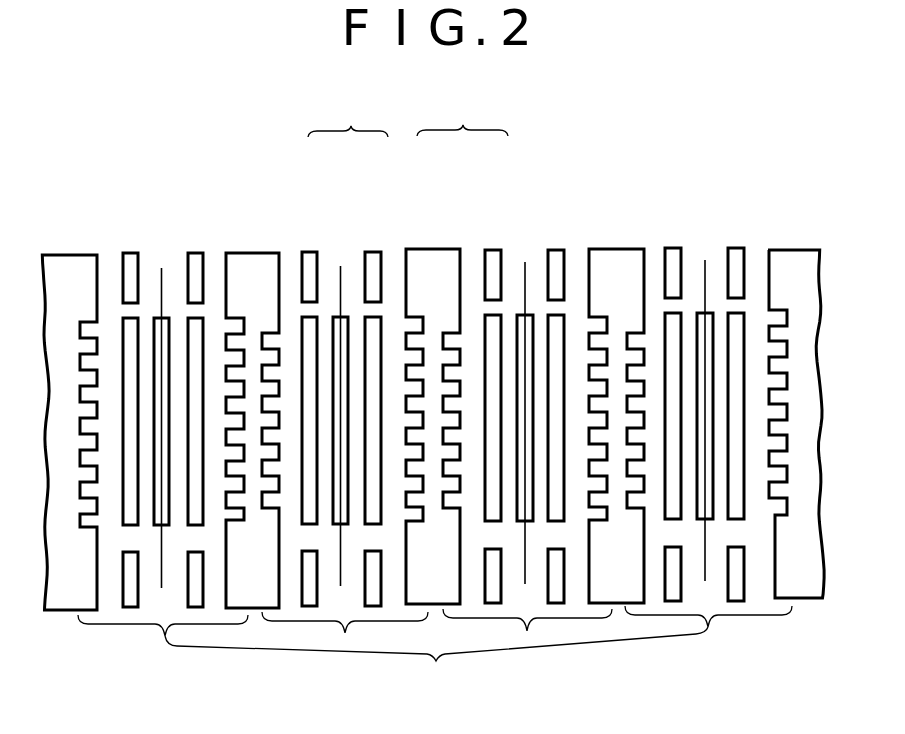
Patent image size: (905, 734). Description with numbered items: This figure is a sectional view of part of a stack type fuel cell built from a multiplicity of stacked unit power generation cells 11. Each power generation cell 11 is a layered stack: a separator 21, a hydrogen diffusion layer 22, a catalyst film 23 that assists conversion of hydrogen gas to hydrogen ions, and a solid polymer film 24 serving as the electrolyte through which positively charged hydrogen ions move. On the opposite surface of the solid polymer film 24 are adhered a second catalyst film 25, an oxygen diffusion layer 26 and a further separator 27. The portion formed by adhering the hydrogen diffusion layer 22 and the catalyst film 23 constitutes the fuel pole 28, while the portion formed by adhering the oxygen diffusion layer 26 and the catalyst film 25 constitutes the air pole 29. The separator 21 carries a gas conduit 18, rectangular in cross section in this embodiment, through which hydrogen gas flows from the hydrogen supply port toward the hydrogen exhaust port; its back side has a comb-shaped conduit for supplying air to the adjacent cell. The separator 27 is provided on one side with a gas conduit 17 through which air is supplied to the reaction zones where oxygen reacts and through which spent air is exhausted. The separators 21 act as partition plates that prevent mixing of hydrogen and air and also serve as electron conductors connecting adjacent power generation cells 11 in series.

The power generation cell 11 is at (452, 701).
The gas conduit 17 is at (414, 326).
The gas conduit 18 is at (277, 330).
The separator 21 is at (250, 259).
The hydrogen diffusion layer 22 is at (323, 348).
The catalyst film 23 is at (331, 338).
The solid polymer film 24 is at (356, 350).
The catalyst film 25 is at (390, 340).
The oxygen diffusion layer 26 is at (392, 330).
The separator 27 is at (428, 252).
The fuel pole 28 is at (348, 120).
The air pole 29 is at (462, 119).